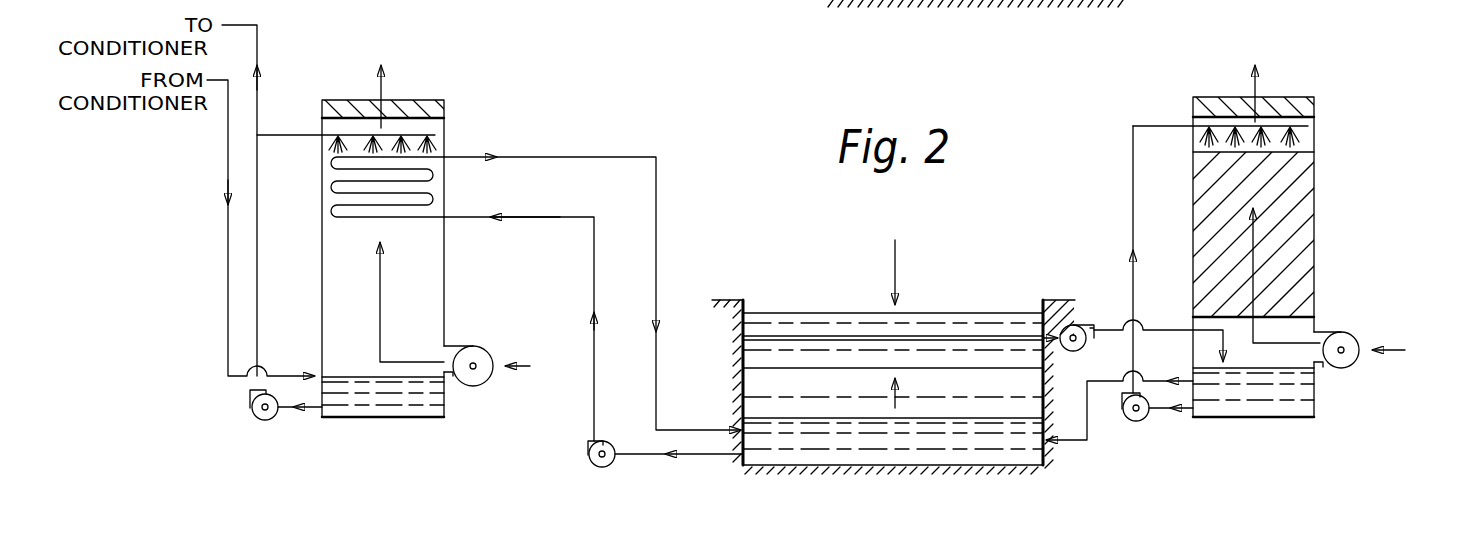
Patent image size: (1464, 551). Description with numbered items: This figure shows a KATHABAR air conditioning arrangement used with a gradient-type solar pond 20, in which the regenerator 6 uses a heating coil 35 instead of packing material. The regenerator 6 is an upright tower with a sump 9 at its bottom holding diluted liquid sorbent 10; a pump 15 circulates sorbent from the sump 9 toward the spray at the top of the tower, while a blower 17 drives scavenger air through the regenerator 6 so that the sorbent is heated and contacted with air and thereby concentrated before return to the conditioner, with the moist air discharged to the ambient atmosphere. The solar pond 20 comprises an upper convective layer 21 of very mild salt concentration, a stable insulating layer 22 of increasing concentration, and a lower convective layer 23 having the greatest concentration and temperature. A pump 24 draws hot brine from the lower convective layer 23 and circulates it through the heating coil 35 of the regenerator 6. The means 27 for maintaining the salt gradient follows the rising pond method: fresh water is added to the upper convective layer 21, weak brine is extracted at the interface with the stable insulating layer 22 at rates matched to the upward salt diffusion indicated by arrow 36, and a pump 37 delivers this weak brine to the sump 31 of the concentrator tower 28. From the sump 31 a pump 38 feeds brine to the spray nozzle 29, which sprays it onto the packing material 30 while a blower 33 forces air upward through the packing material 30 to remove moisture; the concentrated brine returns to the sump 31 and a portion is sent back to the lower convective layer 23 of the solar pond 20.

The regenerator 6 is at (420, 94).
The sump 9 is at (446, 407).
The sump water 10 is at (396, 400).
The pump 15 is at (262, 421).
The blower 17 is at (460, 345).
The solar pond 20 is at (962, 306).
The upper convective layer 21 is at (805, 325).
The stable insulating layer 22 is at (821, 394).
The lower convective layer 23 is at (816, 462).
The pump 24 is at (590, 463).
The means for maintaining salt concentration 27 is at (1318, 175).
The concentrator tower 28 is at (1316, 138).
The spray nozzle 29 is at (1300, 125).
The packing material 30 is at (1300, 210).
The sump 31 is at (1318, 400).
The blower 33 is at (1345, 333).
The heating coil 35 is at (331, 191).
The arrow 36 is at (897, 400).
The pump 37 is at (1077, 325).
The pump 38 is at (1140, 422).